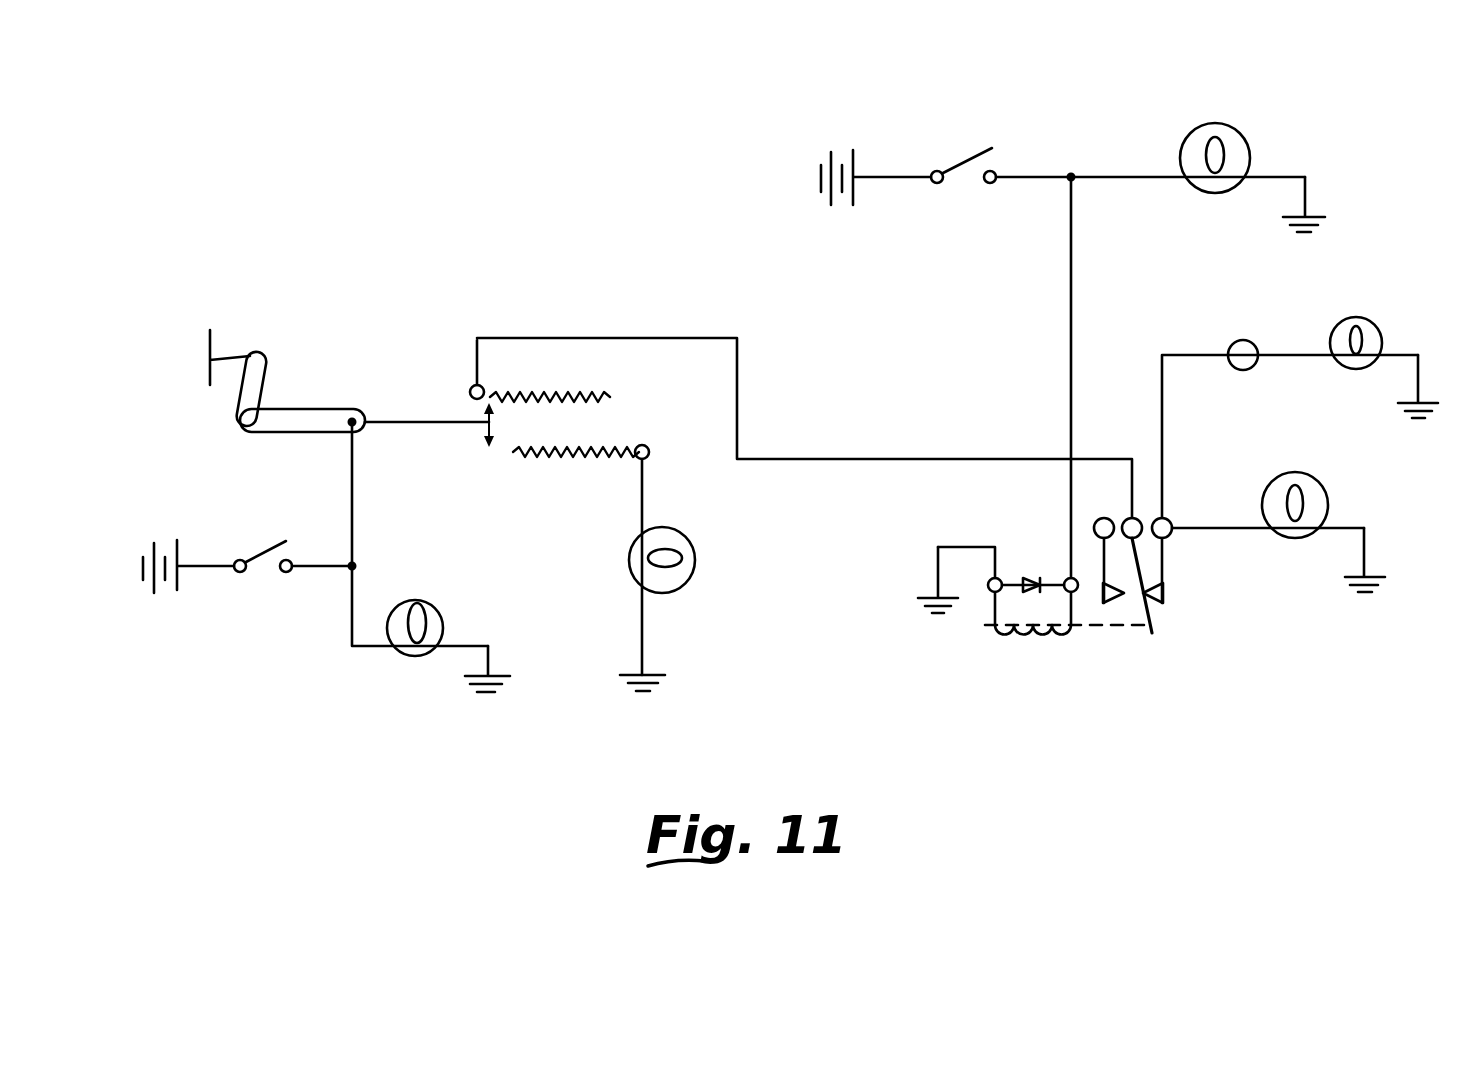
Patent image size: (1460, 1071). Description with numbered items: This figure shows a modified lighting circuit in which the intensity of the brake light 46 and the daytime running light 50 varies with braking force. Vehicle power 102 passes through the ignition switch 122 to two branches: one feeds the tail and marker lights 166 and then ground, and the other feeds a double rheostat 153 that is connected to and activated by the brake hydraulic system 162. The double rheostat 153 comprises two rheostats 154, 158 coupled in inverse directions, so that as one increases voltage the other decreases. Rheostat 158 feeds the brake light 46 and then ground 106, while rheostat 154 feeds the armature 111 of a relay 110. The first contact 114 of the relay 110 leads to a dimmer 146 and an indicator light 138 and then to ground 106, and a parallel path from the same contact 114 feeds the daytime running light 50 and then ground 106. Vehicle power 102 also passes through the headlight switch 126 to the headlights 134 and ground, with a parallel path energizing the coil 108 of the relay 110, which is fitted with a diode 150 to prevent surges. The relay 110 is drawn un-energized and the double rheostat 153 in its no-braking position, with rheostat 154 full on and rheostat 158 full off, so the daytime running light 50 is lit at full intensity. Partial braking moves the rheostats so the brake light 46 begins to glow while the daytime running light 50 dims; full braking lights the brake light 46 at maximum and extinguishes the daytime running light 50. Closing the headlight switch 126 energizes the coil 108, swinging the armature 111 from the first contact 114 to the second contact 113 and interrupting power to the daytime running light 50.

The brake light 46 is at (695, 555).
The daytime running light 50 is at (1318, 472).
The vehicle power 102 is at (188, 537).
The ground 106 is at (505, 663).
The coil 108 is at (1042, 640).
The relay 110 is at (1028, 650).
The armature 111 is at (1153, 636).
The second contact 113 is at (1112, 600).
The first contact 114 is at (1170, 575).
The ignition switch 122 is at (268, 538).
The headlight switch 126 is at (968, 152).
The headlights 134 is at (1203, 124).
The indicator light 138 is at (1400, 272).
The dimmer 146 is at (1243, 340).
The diode 150 is at (1037, 572).
The double rheostat 153 is at (586, 474).
The rheostat 154 is at (468, 386).
The rheostat 158 is at (652, 455).
The brake hydraulic system 162 is at (268, 348).
The tail and marker lights 166 is at (434, 598).